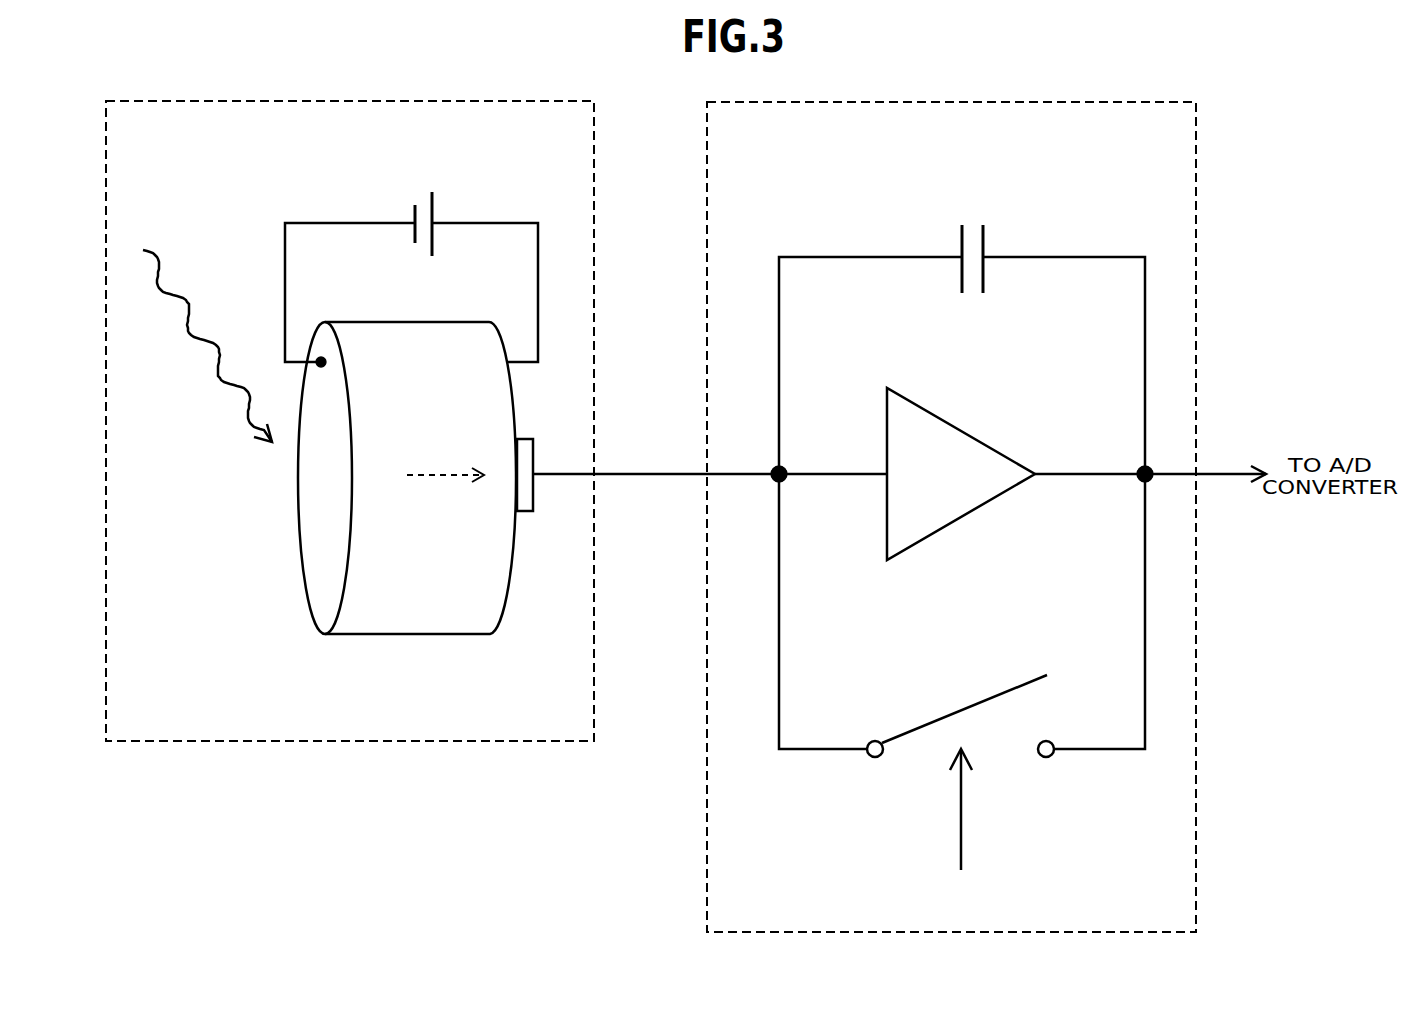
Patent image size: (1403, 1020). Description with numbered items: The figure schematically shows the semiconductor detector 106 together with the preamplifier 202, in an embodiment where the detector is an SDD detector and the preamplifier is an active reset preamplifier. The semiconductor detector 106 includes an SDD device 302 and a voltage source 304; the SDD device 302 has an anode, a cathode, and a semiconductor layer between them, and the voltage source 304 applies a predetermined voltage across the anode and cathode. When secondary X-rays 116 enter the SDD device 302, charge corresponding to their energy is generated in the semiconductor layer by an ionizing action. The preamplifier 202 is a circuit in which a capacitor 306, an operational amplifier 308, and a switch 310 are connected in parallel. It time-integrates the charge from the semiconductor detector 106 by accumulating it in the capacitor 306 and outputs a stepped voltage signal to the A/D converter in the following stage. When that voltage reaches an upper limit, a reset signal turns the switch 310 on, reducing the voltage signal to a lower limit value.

The semiconductor detector 106 is at (348, 742).
The secondary X-rays 116 is at (162, 280).
The preamplifier 202 is at (1197, 732).
The SDD device 302 is at (300, 532).
The voltage source 304 is at (433, 202).
The capacitor 306 is at (984, 240).
The operational amplifier 308 is at (970, 432).
The switch 310 is at (977, 700).